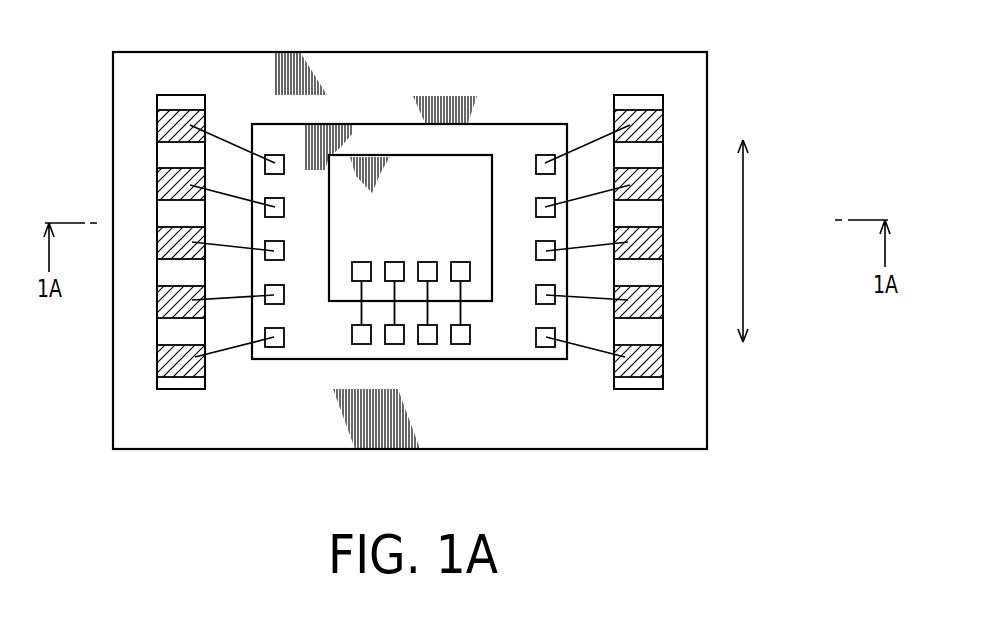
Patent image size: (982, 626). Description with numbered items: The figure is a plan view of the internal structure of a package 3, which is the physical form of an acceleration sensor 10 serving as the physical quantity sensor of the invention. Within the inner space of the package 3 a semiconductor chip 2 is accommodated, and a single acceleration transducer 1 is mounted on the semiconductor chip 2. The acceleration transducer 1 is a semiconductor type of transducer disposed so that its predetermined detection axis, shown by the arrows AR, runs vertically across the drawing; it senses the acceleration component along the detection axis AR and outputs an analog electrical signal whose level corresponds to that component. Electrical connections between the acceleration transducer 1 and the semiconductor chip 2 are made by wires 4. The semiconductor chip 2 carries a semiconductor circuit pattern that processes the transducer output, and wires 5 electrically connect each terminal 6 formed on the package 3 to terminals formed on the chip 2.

The acceleration transducer 1 is at (407, 173).
The semiconductor chip 2 is at (512, 147).
The package 3 is at (707, 72).
The wires 4 is at (462, 313).
The wires 5 is at (226, 137).
The terminal 6 is at (157, 127).
The acceleration sensor 10 is at (471, 252).
The detection axis AR is at (745, 172).